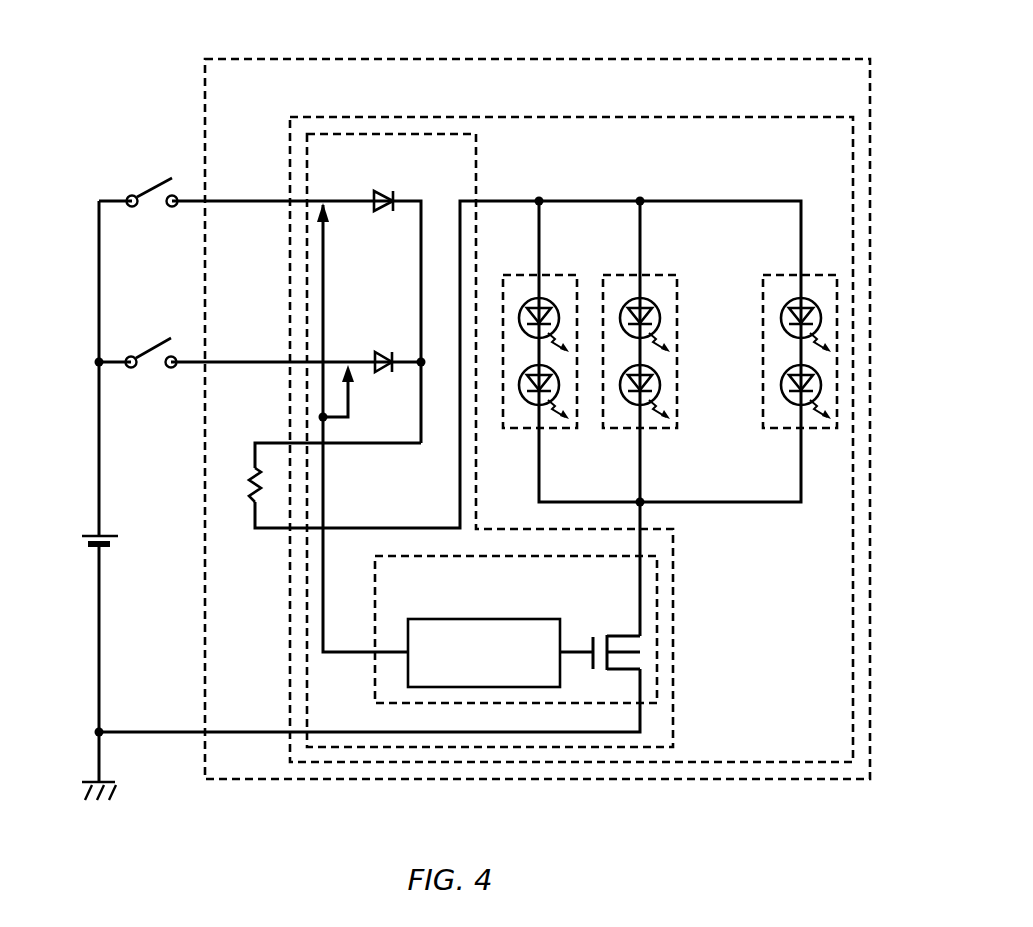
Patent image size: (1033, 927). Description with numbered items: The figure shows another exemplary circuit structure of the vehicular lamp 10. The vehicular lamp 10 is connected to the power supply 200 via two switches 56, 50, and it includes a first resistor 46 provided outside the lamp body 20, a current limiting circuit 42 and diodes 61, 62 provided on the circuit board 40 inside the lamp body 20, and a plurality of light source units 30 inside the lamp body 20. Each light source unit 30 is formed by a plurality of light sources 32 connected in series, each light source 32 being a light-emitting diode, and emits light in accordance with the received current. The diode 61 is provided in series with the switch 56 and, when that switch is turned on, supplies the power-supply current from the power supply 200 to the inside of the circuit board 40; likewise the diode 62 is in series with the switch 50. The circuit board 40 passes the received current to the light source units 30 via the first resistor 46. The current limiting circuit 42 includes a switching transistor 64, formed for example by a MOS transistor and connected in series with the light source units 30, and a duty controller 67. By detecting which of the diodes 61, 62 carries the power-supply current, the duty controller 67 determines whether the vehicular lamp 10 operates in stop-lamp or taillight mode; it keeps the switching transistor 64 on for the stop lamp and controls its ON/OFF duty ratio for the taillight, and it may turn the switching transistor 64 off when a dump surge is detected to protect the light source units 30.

The vehicular lamp 10 is at (510, 59).
The lamp body 20 is at (572, 117).
The light source unit 30 is at (562, 428).
The light source 32 is at (552, 302).
The circuit board 40 is at (476, 154).
The current limiting circuit 42 is at (375, 688).
The first resistor 46 is at (244, 472).
The switch 50 is at (150, 342).
The switch 56 is at (148, 204).
The diode 61 is at (382, 190).
The diode 62 is at (382, 352).
The switching transistor 64 is at (604, 636).
The duty controller 67 is at (480, 619).
The power supply 200 is at (86, 534).